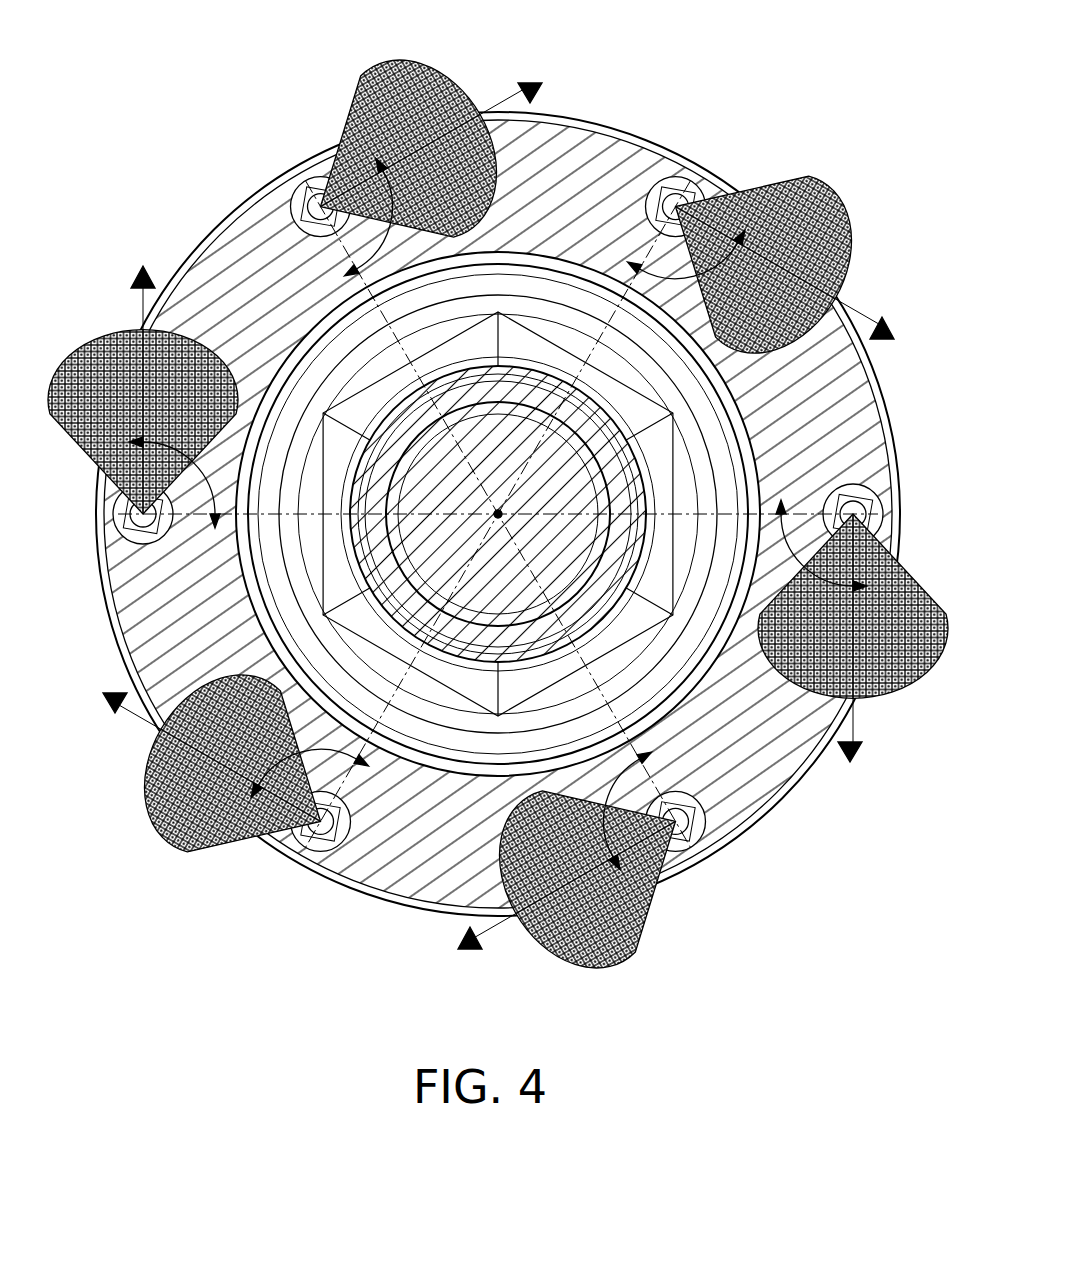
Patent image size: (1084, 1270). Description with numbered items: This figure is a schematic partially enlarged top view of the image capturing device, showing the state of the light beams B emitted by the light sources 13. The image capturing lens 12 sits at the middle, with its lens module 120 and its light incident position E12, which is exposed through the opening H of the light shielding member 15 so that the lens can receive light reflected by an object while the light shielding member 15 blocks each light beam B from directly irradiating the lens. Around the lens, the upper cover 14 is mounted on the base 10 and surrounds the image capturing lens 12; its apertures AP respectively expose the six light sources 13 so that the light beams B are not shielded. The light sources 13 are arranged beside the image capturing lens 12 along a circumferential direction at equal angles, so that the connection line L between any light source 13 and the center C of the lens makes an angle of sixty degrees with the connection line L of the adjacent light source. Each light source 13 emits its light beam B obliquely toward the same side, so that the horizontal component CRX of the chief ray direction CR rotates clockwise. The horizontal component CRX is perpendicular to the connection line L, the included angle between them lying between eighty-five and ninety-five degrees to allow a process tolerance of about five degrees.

The base 10 is at (851, 432).
The image capturing lens 12 is at (497, 430).
The lens module 120 is at (509, 337).
The light incident position E12 is at (536, 331).
The light source 13 is at (857, 507).
The upper cover 14 is at (848, 396).
The light shielding member 15 is at (595, 668).
The light beam B is at (380, 63).
The opening H is at (397, 400).
The connection line L is at (410, 344).
The center C is at (498, 514).
The aperture AP is at (862, 485).
The chief ray direction CR is at (487, 487).
The horizontal component CRX is at (488, 520).